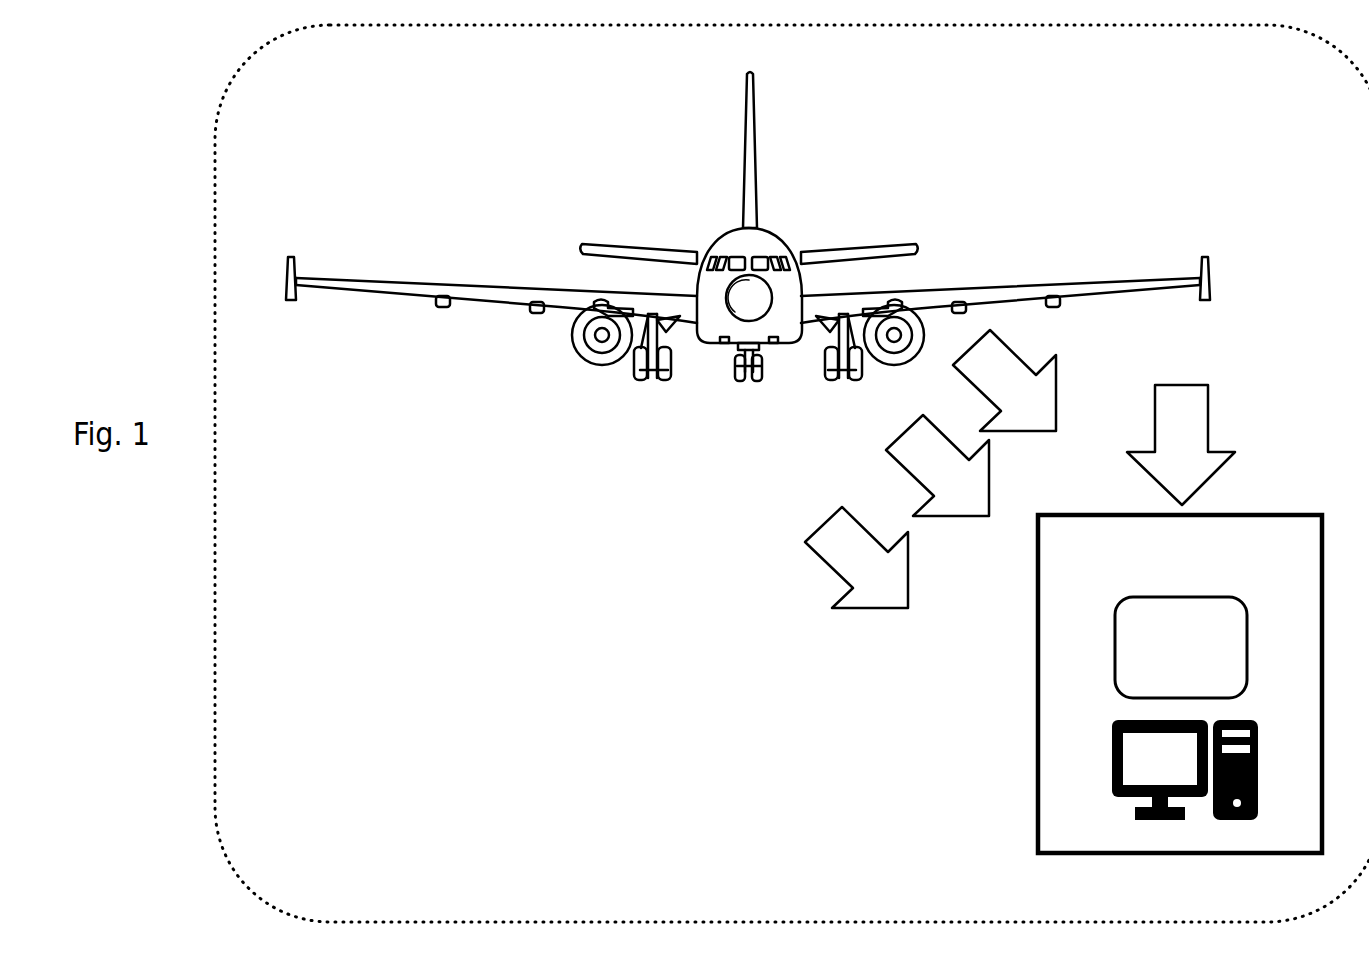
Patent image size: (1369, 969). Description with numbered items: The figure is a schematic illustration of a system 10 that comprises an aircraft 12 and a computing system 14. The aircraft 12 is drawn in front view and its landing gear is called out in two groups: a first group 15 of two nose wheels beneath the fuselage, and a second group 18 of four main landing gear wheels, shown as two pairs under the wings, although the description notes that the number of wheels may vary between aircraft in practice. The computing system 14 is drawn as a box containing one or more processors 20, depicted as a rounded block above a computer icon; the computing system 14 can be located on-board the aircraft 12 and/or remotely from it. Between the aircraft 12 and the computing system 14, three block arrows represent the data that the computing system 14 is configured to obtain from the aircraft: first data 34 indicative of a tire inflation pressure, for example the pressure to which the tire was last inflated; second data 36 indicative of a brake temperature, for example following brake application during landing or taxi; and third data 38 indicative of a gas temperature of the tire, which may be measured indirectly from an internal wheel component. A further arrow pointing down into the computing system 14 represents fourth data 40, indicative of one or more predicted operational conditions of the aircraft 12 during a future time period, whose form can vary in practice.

The system 10 is at (1292, 126).
The aircraft 12 is at (748, 277).
The computing system 14 is at (1204, 573).
The first group of two nose wheels 15 is at (778, 388).
The second group of four main landing gear wheels 18 is at (682, 388).
The processor 20 is at (1197, 659).
The first data 34 is at (897, 596).
The second data 36 is at (978, 499).
The third data 38 is at (1045, 416).
The fourth data 40 is at (1200, 468).